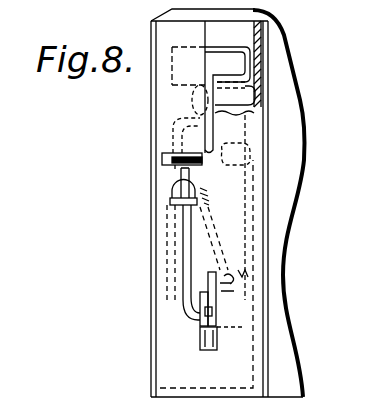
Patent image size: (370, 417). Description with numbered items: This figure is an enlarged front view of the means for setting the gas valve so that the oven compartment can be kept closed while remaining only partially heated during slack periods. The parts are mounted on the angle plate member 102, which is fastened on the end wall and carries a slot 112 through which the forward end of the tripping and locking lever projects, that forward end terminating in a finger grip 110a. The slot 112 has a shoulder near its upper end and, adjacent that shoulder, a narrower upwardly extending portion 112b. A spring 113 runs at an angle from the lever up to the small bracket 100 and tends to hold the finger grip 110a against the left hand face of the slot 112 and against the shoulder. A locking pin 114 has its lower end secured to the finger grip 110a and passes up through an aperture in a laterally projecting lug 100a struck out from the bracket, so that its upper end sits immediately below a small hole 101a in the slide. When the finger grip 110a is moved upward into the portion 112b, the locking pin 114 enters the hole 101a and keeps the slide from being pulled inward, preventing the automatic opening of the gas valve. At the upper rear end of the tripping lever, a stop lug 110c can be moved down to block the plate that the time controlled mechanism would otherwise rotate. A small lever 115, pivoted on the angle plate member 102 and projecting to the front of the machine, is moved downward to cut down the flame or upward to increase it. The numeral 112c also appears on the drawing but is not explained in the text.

The stop lug 110c is at (232, 42).
The small lever 115 is at (213, 135).
The small hole 101a is at (170, 162).
The laterally projecting lug 100a is at (172, 202).
The small bracket 100 is at (168, 228).
The spring 113 is at (200, 203).
The locking pin 114 is at (185, 266).
The upwardly extending portion 112b is at (208, 282).
The lug 112c is at (200, 327).
The slot 112 is at (203, 348).
The finger grip 110a is at (235, 339).
The angle plate member 102 is at (172, 385).